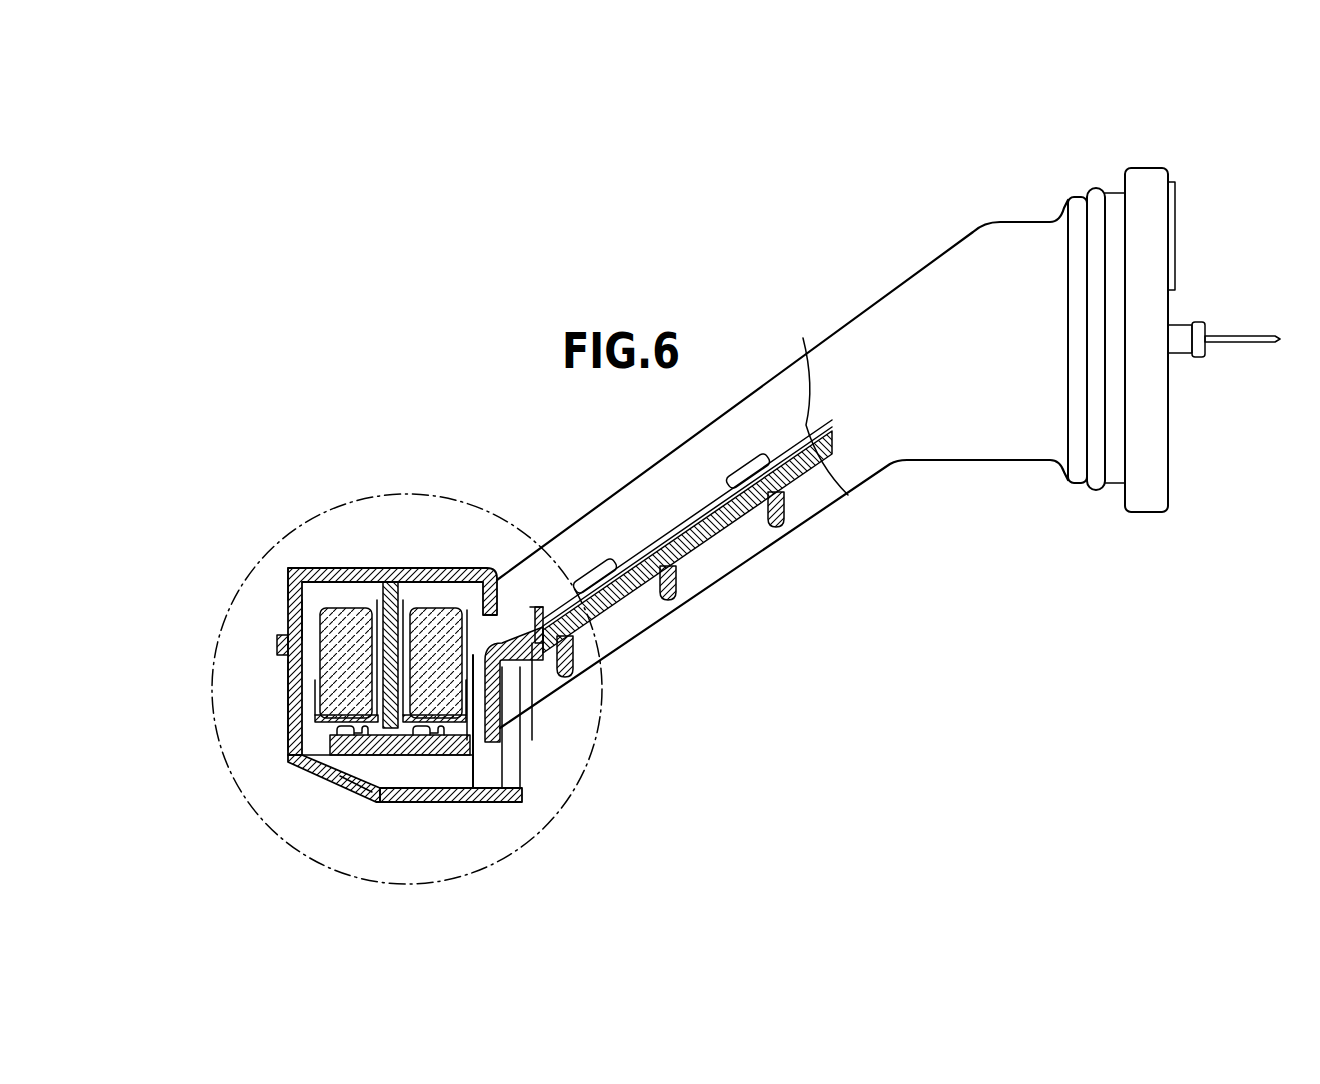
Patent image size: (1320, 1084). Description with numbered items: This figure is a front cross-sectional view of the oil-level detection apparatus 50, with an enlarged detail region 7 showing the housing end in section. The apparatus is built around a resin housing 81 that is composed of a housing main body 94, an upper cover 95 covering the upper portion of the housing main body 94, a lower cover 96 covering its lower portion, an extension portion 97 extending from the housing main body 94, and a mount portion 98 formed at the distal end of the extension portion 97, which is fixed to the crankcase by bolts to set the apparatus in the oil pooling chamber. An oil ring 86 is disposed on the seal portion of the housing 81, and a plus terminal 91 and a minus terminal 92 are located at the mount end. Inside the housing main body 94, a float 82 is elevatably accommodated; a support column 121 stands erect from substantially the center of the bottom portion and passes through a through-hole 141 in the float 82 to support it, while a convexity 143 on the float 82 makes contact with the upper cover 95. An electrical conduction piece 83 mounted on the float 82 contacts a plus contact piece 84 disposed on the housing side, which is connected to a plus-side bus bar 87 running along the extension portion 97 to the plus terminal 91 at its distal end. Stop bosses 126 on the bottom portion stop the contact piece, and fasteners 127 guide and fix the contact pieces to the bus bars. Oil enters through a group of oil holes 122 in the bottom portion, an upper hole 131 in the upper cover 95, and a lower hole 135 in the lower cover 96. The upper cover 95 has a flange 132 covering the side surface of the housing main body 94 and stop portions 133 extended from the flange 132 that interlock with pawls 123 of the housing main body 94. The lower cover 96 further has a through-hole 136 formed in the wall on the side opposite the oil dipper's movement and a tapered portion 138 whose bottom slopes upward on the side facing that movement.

The oil-level detection apparatus 50 is at (468, 334).
The enlarged detail region 7 is at (287, 534).
The housing 81 is at (256, 656).
The float 82 is at (355, 662).
The electrical conduction piece 83 is at (455, 745).
The plus contact piece 84 is at (482, 745).
The oil ring 86 is at (1095, 192).
The plus-side bus bar 87 is at (699, 531).
The plus terminal 91 is at (1181, 323).
The minus terminal 92 is at (1174, 183).
The housing main body 94 is at (270, 701).
The upper cover 95 is at (331, 562).
The lower cover 96 is at (356, 792).
The extension portion 97 is at (661, 622).
The mount portion 98 is at (1160, 164).
The support column 121 is at (412, 608).
The oil holes 122 is at (299, 752).
The pawls 123 is at (294, 600).
The stop bosses 126 is at (357, 740).
The fasteners 127 is at (438, 591).
The upper hole 131 is at (356, 566).
The flange 132 is at (577, 528).
The stop portions 133 is at (277, 645).
The lower hole 135 is at (405, 758).
The through-hole 136 is at (527, 756).
The tapered portion 138 is at (344, 789).
The through-hole 141 is at (400, 598).
The convexity 143 is at (289, 570).